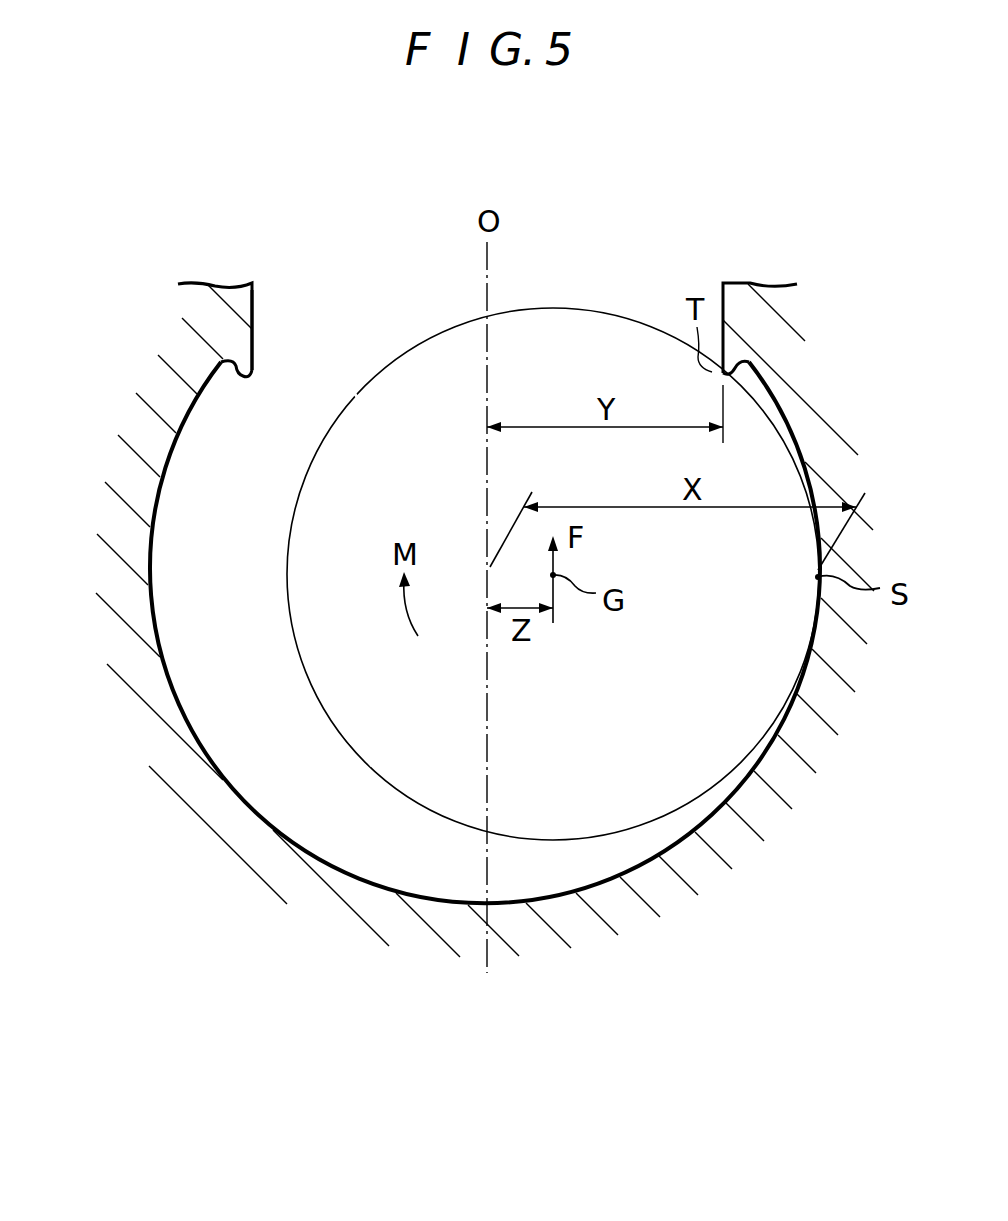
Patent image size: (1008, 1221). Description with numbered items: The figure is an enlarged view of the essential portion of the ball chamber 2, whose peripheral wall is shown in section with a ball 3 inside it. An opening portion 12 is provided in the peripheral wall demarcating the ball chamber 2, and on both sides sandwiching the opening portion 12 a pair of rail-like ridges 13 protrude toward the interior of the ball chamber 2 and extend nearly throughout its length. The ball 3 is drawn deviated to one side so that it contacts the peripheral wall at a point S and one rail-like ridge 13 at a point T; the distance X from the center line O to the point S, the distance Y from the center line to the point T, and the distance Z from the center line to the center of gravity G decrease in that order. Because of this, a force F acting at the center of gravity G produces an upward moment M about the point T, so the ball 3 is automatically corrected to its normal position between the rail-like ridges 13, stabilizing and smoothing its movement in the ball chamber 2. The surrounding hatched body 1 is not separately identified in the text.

The cylinder body 1 is at (125, 440).
The ball chamber 2 is at (247, 711).
The ball 3 is at (288, 560).
The opening portion 12 is at (252, 315).
The rail-like ridges 13 is at (243, 378).